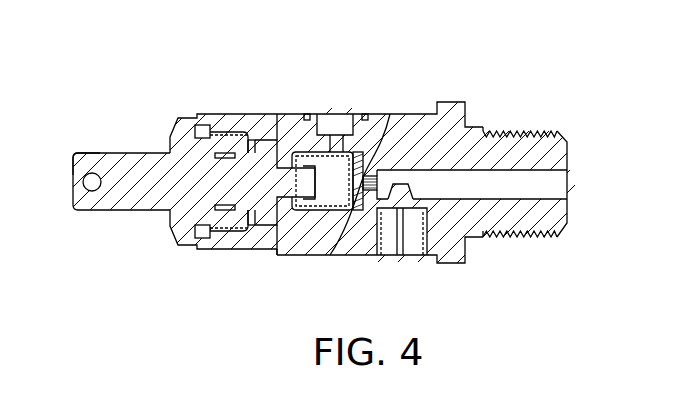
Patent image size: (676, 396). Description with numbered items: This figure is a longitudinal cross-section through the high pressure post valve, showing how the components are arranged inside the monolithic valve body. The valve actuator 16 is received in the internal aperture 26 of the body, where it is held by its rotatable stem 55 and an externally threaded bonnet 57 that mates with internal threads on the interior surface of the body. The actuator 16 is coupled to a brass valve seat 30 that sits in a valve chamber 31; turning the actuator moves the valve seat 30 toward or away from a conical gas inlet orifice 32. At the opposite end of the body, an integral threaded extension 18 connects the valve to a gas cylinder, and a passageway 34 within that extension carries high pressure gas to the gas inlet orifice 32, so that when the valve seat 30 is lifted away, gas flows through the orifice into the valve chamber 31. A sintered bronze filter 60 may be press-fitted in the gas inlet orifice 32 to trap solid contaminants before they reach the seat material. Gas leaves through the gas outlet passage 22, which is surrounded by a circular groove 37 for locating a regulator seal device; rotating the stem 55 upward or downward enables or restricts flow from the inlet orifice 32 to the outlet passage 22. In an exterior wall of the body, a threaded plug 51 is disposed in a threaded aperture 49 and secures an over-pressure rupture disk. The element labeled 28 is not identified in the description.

The valve actuator 16 is at (92, 152).
The rotatable stem 55 is at (122, 165).
The externally threaded bonnet 57 is at (178, 132).
The internal aperture 26 is at (287, 130).
The circular groove 37 is at (307, 114).
The valve seat 30 is at (332, 128).
The gas outlet passage 22 is at (345, 120).
The valve chamber 31 is at (360, 160).
The gas inlet orifice 32 is at (375, 180).
The threaded extension 18 is at (558, 147).
The bore 28 is at (553, 172).
The passageway 34 is at (520, 187).
The sintered bronze filter 60 is at (352, 212).
The threaded plug 51 is at (387, 242).
The threaded aperture 49 is at (425, 240).